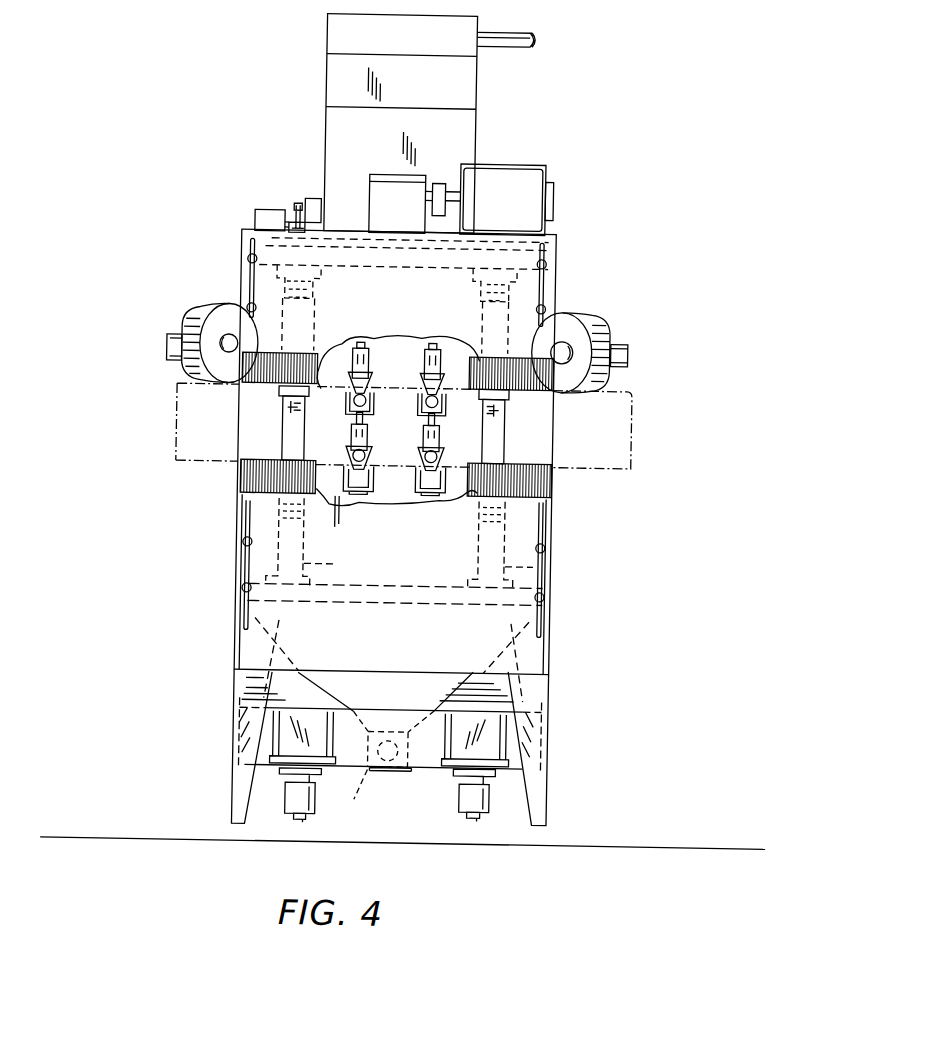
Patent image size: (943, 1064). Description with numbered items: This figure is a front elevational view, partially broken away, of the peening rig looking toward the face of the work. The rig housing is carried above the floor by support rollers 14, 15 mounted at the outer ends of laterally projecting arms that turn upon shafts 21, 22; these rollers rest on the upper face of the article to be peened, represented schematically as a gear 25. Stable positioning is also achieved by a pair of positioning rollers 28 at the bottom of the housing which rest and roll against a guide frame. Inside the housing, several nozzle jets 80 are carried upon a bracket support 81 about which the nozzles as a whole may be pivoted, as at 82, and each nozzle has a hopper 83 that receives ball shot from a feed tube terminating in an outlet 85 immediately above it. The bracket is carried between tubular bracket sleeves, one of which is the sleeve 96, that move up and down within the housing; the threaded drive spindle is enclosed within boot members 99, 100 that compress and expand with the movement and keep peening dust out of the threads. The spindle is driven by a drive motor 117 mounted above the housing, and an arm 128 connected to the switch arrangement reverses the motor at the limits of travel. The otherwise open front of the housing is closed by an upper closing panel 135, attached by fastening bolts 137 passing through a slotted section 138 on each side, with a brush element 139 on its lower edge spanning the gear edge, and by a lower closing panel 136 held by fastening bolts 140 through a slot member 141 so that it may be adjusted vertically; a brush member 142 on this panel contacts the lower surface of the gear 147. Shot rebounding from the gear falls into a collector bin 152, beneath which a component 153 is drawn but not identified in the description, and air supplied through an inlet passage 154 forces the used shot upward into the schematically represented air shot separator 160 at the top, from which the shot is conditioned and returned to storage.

The support roller 14 is at (201, 324).
The support roller 15 is at (597, 327).
The shaft 21 is at (169, 366).
The shaft 22 is at (626, 353).
The gear 25 is at (183, 488).
The positioning rollers 28 is at (319, 811).
The nozzle jets 80 is at (428, 465).
The bracket support 81 is at (445, 401).
The pivot 82 is at (347, 401).
The hopper 83 is at (430, 380).
The outlet 85 is at (351, 366).
The tubular bracket sleeve 96 is at (284, 432).
The boot member 99 is at (310, 568).
The boot member 100 is at (309, 300).
The drive motor 117 is at (500, 178).
The arm 128 is at (294, 205).
The upper closing panel 135 is at (544, 282).
The lower closing panel 136 is at (542, 568).
The fastening bolts 137 is at (246, 259).
The slotted section 138 is at (246, 270).
The brush element 139 is at (306, 362).
The fastening bolts 140 is at (245, 545).
The slot member 141 is at (247, 624).
The brush member 142 is at (261, 482).
The lower surface of the gear 147 is at (318, 503).
The collector bin 152 is at (324, 692).
The outlet 153 is at (391, 776).
The inlet passage 154 is at (366, 779).
The air shot separator 160 is at (323, 46).